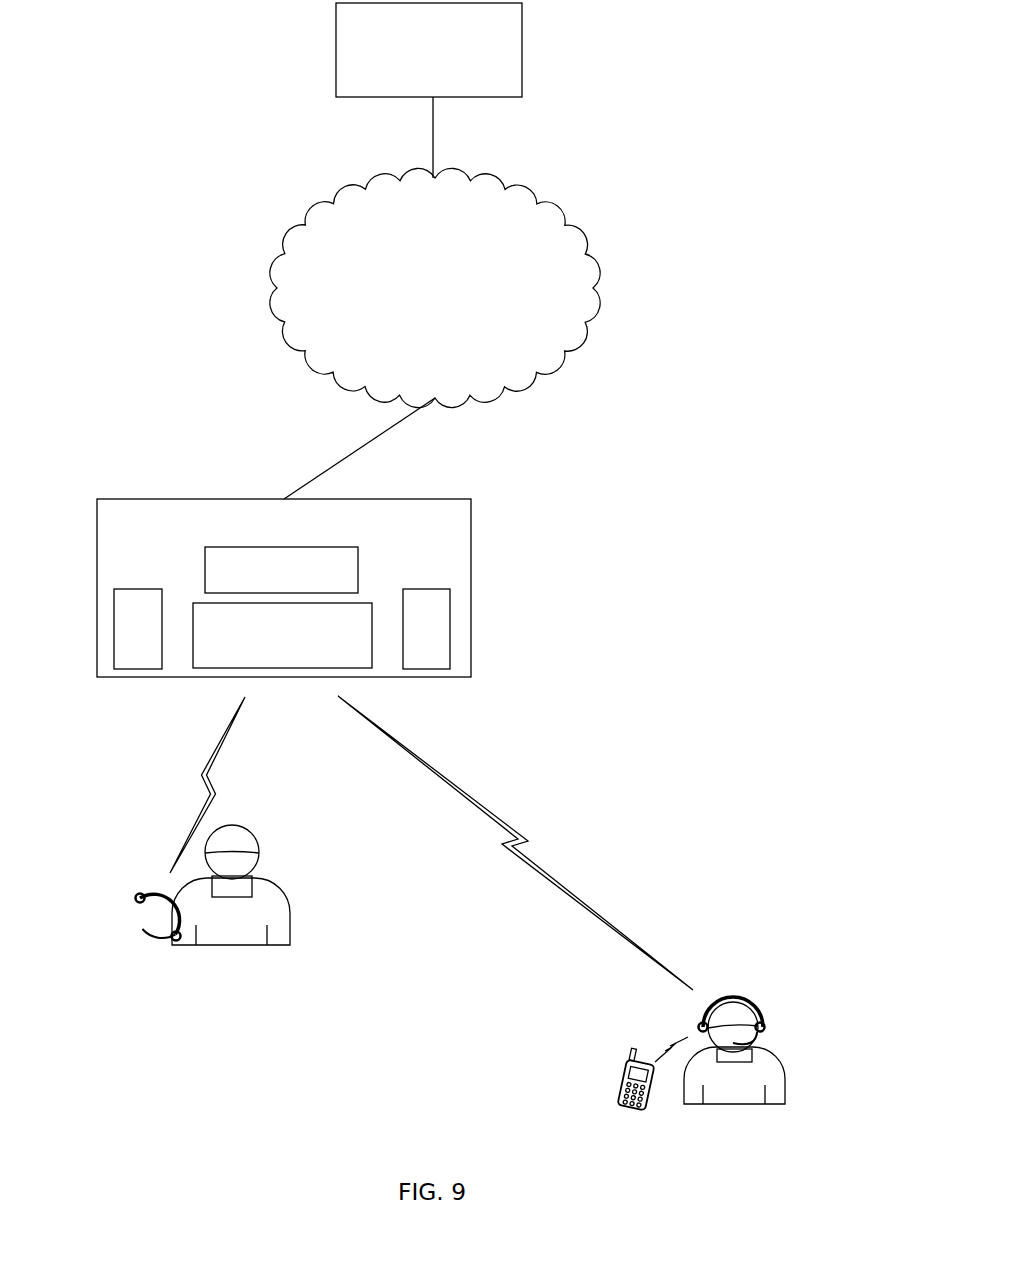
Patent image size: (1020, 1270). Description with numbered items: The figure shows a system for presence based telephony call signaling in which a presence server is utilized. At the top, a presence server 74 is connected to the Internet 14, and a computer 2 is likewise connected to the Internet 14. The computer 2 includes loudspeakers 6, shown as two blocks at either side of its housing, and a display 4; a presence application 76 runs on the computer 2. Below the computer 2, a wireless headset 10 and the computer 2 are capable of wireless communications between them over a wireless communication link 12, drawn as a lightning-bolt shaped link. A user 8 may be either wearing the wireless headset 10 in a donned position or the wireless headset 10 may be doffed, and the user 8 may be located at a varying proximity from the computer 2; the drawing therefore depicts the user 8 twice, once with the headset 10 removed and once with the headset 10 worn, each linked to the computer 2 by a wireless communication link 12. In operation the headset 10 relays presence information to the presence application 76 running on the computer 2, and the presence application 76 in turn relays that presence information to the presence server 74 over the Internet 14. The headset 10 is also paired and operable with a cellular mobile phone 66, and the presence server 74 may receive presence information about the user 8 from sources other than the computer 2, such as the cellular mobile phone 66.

The presence server 74 is at (429, 50).
The Internet 14 is at (435, 287).
The computer 2 is at (284, 588).
The display 4 is at (281, 570).
The presence application 76 is at (282, 635).
The loudspeakers 6 is at (282, 629).
The wireless communication link 12 is at (425, 843).
The user 8 is at (287, 897).
The wireless headset 10 is at (148, 928).
The cellular mobile phone 66 is at (625, 1077).